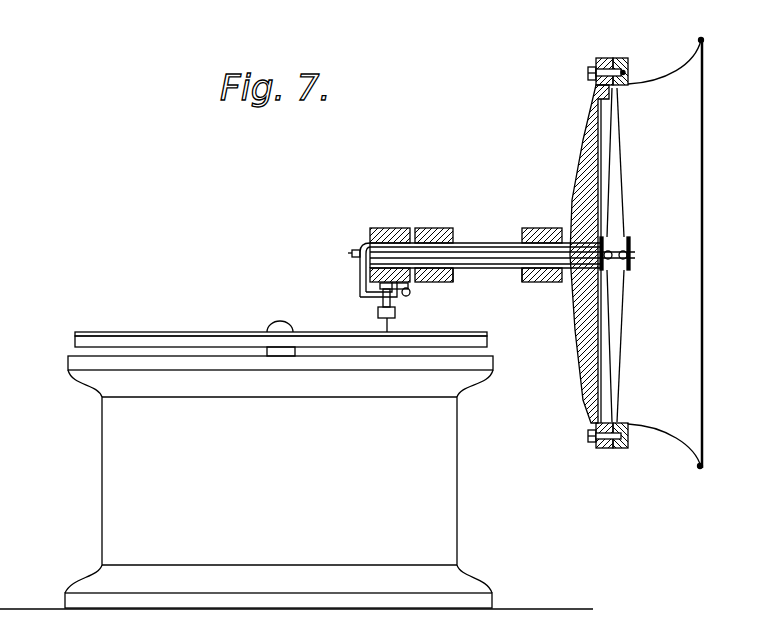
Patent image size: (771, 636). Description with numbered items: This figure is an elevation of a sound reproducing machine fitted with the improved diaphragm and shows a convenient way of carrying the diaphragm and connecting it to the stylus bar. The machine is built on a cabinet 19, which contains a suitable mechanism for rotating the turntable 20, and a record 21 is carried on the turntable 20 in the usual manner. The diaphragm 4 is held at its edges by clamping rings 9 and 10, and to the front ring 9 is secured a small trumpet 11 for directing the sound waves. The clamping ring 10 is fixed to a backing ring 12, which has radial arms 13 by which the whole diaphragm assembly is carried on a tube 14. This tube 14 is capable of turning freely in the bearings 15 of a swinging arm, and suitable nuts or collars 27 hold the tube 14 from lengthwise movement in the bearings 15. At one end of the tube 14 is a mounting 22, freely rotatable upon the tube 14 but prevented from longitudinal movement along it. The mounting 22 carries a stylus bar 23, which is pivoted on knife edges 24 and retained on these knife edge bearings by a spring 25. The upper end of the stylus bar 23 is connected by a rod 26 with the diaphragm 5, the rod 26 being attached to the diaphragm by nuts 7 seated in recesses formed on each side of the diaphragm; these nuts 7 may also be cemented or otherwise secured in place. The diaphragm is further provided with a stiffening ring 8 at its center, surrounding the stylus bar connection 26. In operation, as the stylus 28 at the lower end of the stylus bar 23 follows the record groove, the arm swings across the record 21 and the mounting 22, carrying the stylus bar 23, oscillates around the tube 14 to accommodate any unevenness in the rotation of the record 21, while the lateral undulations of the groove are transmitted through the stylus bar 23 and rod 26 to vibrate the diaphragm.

The diaphragm 4 is at (615, 165).
The diaphragm 5 is at (617, 335).
The nuts 7 is at (627, 258).
The stiffening ring 8 is at (605, 240).
The clamping ring 9 is at (620, 58).
The clamping ring 10 is at (610, 58).
The trumpet 11 is at (705, 82).
The backing ring 12 is at (598, 87).
The radial arms 13 is at (585, 123).
The tube 14 is at (455, 230).
The bearings 15 is at (432, 282).
The cabinet 19 is at (296, 482).
The turntable 20 is at (75, 341).
The record 21 is at (105, 332).
The mounting 22 is at (390, 228).
The stylus bar 23 is at (360, 294).
The knife edges 24 is at (408, 291).
The spring 25 is at (392, 300).
The rod 26 is at (492, 252).
The nuts or collars 27 is at (457, 279).
The stylus 28 is at (378, 318).